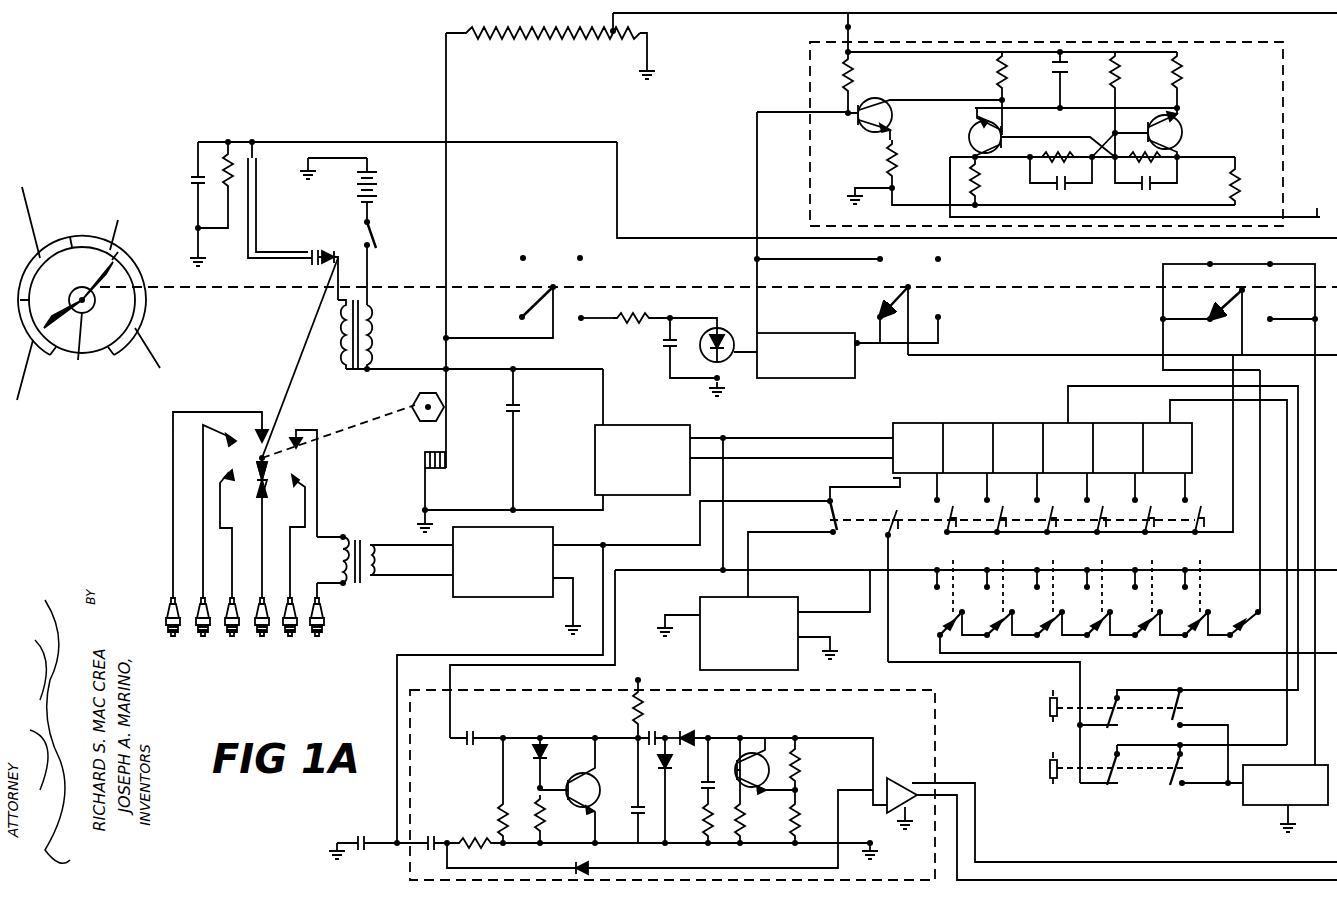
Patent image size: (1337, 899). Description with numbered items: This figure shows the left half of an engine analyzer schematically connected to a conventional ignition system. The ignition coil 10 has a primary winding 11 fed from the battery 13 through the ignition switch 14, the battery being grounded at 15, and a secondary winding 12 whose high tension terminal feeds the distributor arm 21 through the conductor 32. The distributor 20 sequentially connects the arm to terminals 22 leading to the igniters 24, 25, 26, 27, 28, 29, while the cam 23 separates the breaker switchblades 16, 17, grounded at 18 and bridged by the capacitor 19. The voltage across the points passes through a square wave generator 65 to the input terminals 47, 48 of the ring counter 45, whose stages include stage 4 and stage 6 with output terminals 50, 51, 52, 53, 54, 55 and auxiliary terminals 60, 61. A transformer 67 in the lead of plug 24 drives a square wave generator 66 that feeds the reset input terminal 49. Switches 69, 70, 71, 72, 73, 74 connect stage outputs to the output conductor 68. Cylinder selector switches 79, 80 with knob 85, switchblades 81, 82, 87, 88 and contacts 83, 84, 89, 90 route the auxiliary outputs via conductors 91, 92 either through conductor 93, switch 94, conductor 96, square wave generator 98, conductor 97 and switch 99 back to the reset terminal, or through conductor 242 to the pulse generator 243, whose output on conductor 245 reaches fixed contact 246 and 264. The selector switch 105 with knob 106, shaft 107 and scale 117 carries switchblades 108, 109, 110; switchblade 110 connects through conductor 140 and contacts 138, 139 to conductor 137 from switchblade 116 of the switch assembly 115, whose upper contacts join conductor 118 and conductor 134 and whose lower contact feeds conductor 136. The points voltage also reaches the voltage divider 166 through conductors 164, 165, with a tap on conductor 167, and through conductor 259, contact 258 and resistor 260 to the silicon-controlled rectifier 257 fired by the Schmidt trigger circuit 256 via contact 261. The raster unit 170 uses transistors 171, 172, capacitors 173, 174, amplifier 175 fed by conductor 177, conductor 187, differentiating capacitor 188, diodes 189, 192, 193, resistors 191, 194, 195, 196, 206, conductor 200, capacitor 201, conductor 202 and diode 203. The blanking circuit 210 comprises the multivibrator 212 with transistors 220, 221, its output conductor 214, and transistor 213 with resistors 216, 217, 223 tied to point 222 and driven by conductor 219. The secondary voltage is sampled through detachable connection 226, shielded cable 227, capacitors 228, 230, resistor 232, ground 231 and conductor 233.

The counter stage 4 is at (1103, 706).
The counter stage 6 is at (1103, 769).
The ignition coil 10 is at (334, 330).
The primary winding 11 is at (372, 322).
The secondary winding 12 is at (340, 352).
The battery 13 is at (380, 186).
The ignition switch 14 is at (378, 238).
The ground 15 is at (304, 170).
The switchblade 16 is at (446, 458).
The switchblade 17 is at (425, 462).
The ground 18 is at (420, 522).
The capacitor 19 is at (524, 408).
The distributor 20 is at (226, 461).
The distributor arm 21 is at (268, 464).
The terminals 22 is at (291, 436).
The cam 23 is at (412, 404).
The igniter 24 is at (321, 632).
The igniter 25 is at (292, 637).
The igniter 26 is at (262, 637).
The igniter 27 is at (232, 637).
The igniter 28 is at (205, 637).
The igniter 29 is at (178, 612).
The conductor 32 is at (335, 350).
The ring counter 45 is at (1032, 421).
The input terminal 47 is at (893, 436).
The input terminal 48 is at (791, 448).
The reset input terminal 49 is at (865, 483).
The output terminal 50 is at (953, 488).
The output terminal 51 is at (1003, 488).
The output terminal 52 is at (1053, 488).
The output terminal 53 is at (1103, 488).
The output terminal 54 is at (1151, 488).
The output terminal 55 is at (1201, 488).
The auxiliary output terminal 60 is at (1070, 423).
The auxiliary output terminal 61 is at (1172, 423).
The square wave generator 65 is at (663, 495).
The square wave generator 66 is at (510, 600).
The transformer 67 is at (358, 585).
The output conductor 68 is at (1050, 355).
The switch 69 is at (956, 531).
The switch 70 is at (1006, 531).
The switch 71 is at (1056, 531).
The switch 72 is at (1106, 531).
The switch 73 is at (1154, 531).
The switch 74 is at (1204, 531).
The cylinder selector switch 79 is at (1168, 680).
The cylinder selector switch 80 is at (1145, 779).
The switchblade 81 is at (1110, 727).
The switchblade 82 is at (1185, 712).
The fixed contact 83 is at (1117, 697).
The fixed contact 84 is at (1183, 690).
The actuating knob 85 is at (1053, 690).
The switchblade 87 is at (1108, 790).
The switchblade 88 is at (1174, 790).
The fixed contact 89 is at (1120, 756).
The fixed contact 90 is at (1182, 756).
The conductor 91 is at (1147, 386).
The conductor 92 is at (1233, 742).
The conductor 93 is at (890, 665).
The switch 94 is at (904, 586).
The conductor 96 is at (835, 633).
The conductor 97 is at (971, 523).
The square wave generator 98 is at (795, 604).
The switch 99 is at (829, 522).
The selector switch 105 is at (724, 252).
The knob 106 is at (67, 348).
The shaft 107 is at (222, 290).
The switchblade 108 is at (541, 300).
The switchblade 109 is at (897, 293).
The switchblade 110 is at (1226, 296).
The switch assembly 115 is at (1002, 633).
The switchblade 116 is at (1138, 646).
The scale 117 is at (67, 236).
The conductor 118 is at (835, 569).
The conductor 134 is at (730, 478).
The conductor 136 is at (1230, 656).
The conductor 137 is at (1163, 336).
The fixed contact 138 is at (1194, 335).
The fixed contact 139 is at (1211, 264).
The conductor 140 is at (1280, 338).
The conductor 164 is at (448, 355).
The conductor 165 is at (448, 188).
The voltage divider 166 is at (500, 40).
The conductor 167 is at (694, 15).
The raster signal generating unit 170 is at (1000, 705).
The transistor 171 is at (549, 790).
The transistor 172 is at (762, 757).
The capacitor 173 is at (653, 728).
The capacitor 174 is at (704, 785).
The amplifier 175 is at (920, 768).
The conductor 177 is at (977, 843).
The conductor 187 is at (690, 570).
The differentiating capacitor 188 is at (468, 728).
The diode 189 is at (538, 746).
The resistor 191 is at (685, 829).
The diode 192 is at (690, 733).
The diode 193 is at (657, 768).
The resistor 194 is at (636, 708).
The resistor 195 is at (801, 765).
The resistor 196 is at (797, 823).
The conductor 200 is at (533, 655).
The differentiating capacitor 201 is at (431, 832).
The conductor 202 is at (490, 858).
The diode 203 is at (586, 868).
The emitter resistor 206 is at (759, 808).
The blanking circuit 210 is at (1283, 92).
The free-running multivibrator 212 is at (1044, 78).
The transistor 213 is at (882, 100).
The conductor 214 is at (1307, 204).
The resistor 216 is at (888, 157).
The resistor 217 is at (845, 72).
The conductor 219 is at (757, 125).
The transistor 220 is at (880, 265).
The transistor 221 is at (1181, 121).
The point 222 is at (845, 27).
The resistor 223 is at (1000, 72).
The detachable connection 226 is at (331, 252).
The shielded cable 227 is at (258, 208).
The capacitor 228 is at (312, 268).
The capacitor 230 is at (193, 186).
The ground 231 is at (190, 256).
The resistor 232 is at (225, 150).
The conductor 233 is at (618, 170).
The conductor 242 is at (1228, 790).
The pulse generator 243 is at (1268, 810).
The conductor 245 is at (1312, 400).
The fixed contact 246 is at (1272, 264).
The Schmidt trigger circuit 256 is at (805, 380).
The silicon-controlled rectifier 257 is at (732, 333).
The fixed contact 258 is at (581, 321).
The conductor 259 is at (603, 340).
The resistor 260 is at (666, 350).
The fixed contact 261 is at (942, 318).
The fixed contact 264 is at (1270, 318).